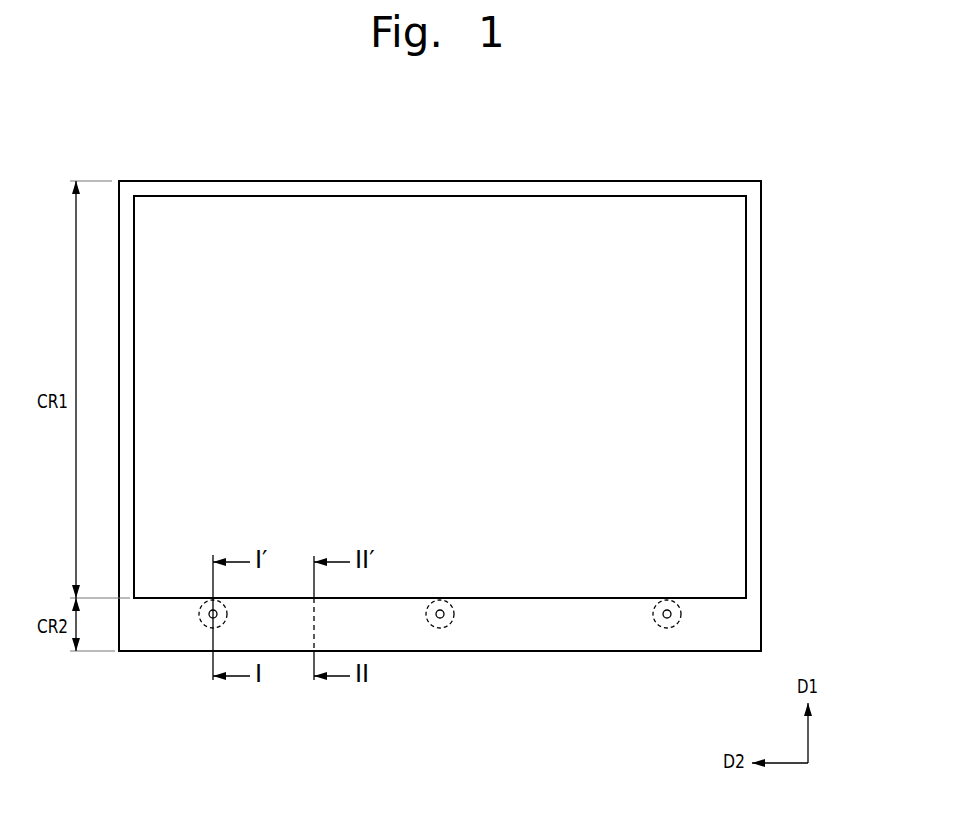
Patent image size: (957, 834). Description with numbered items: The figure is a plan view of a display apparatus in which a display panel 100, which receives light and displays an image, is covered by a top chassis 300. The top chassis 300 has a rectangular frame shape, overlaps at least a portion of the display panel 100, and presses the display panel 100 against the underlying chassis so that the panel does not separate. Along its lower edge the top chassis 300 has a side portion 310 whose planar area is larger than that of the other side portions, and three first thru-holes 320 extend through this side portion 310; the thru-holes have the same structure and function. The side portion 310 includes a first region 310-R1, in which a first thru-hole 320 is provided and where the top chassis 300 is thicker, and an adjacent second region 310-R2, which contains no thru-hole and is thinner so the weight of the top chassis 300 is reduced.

The display panel 100 is at (737, 325).
The top chassis 300 is at (757, 415).
The side portion 310 is at (507, 628).
The first thru-hole 320 is at (440, 620).
The first region 310-R1 is at (672, 626).
The second region 310-R2 is at (626, 629).